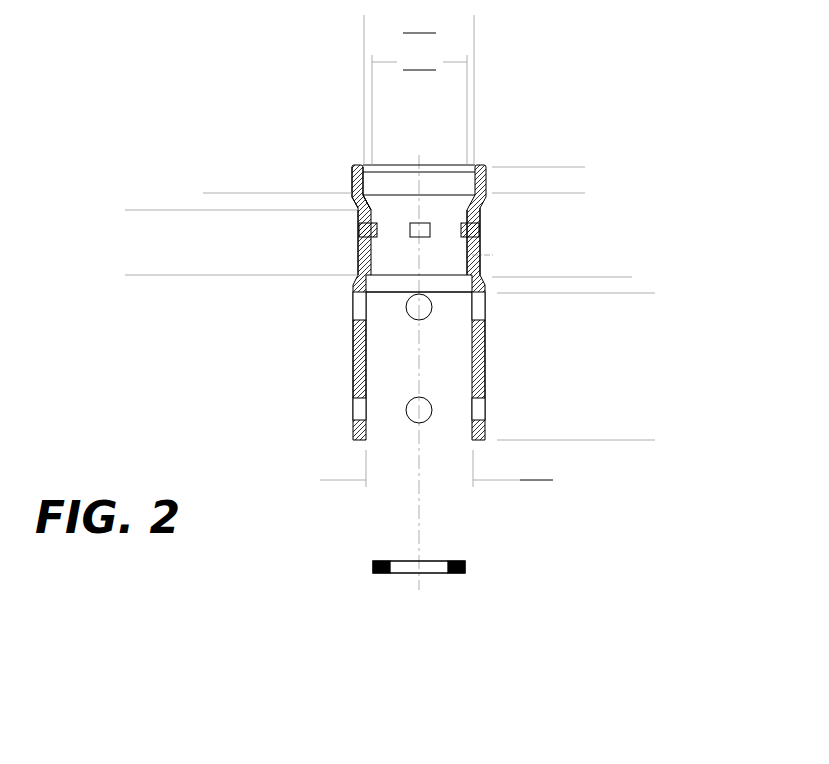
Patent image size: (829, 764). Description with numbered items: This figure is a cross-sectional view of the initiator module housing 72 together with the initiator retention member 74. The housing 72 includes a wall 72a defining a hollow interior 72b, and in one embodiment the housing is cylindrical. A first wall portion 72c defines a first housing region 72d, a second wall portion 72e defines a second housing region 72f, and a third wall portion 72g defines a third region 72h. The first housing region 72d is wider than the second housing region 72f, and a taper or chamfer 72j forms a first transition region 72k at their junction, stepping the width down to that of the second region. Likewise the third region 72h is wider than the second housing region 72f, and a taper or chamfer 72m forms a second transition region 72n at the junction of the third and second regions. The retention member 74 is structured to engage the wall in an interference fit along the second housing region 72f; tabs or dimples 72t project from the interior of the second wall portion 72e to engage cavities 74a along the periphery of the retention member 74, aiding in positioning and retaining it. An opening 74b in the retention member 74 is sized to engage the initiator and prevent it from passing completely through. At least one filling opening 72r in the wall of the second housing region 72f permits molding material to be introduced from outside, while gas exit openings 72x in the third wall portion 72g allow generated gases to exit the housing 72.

The initiator module housing 72 is at (352, 166).
The wall 72a is at (480, 237).
The hollow interior 72b is at (383, 328).
The first wall portion 72c is at (353, 192).
The first housing region 72d is at (578, 215).
The second wall portion 72e is at (362, 262).
The second housing region 72f is at (133, 297).
The third wall portion 72g is at (487, 354).
The third region 72h is at (650, 293).
The taper or chamfer 72j is at (368, 197).
The first transition region 72k is at (209, 228).
The taper or chamfer 72m is at (371, 275).
The second transition region 72n is at (628, 317).
The filling opening 72r is at (482, 255).
The tabs or dimples 72t is at (410, 237).
The gas exit openings 72x is at (406, 415).
The initiator retention member 74 is at (427, 573).
The cavities 74a is at (465, 561).
The opening 74b is at (402, 568).